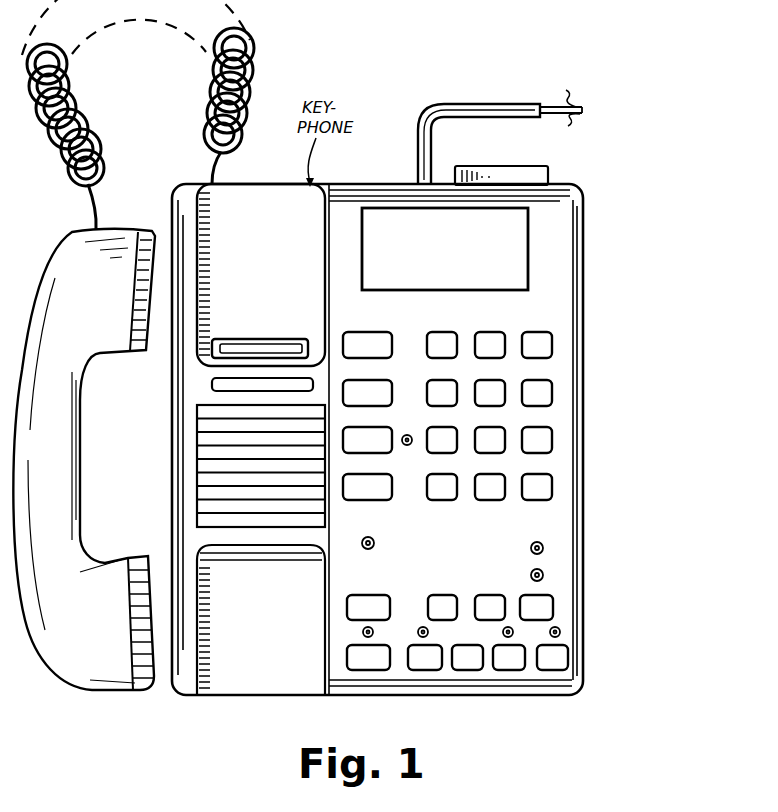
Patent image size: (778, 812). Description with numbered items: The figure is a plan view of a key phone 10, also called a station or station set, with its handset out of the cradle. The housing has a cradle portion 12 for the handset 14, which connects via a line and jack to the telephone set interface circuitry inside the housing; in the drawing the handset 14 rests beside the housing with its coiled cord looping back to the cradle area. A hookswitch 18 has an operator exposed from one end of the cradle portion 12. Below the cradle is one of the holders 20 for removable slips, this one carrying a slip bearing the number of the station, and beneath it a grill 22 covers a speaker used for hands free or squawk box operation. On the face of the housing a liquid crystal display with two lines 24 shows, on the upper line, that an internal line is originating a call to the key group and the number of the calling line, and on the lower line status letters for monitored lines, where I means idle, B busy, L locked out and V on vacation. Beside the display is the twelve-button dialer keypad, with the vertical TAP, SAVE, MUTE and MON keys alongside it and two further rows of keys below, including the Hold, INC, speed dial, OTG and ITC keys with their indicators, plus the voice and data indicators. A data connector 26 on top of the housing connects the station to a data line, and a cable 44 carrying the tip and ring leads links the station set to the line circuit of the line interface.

The key phone 10 is at (583, 456).
The cradle portion 12 is at (262, 210).
The handset 14 is at (80, 445).
The hookswitch 18 is at (257, 346).
The holder 20 is at (212, 384).
The grill 22 is at (196, 488).
The liquid crystal display 24 is at (528, 250).
The data interface 26 is at (548, 175).
The cable 44 is at (465, 105).